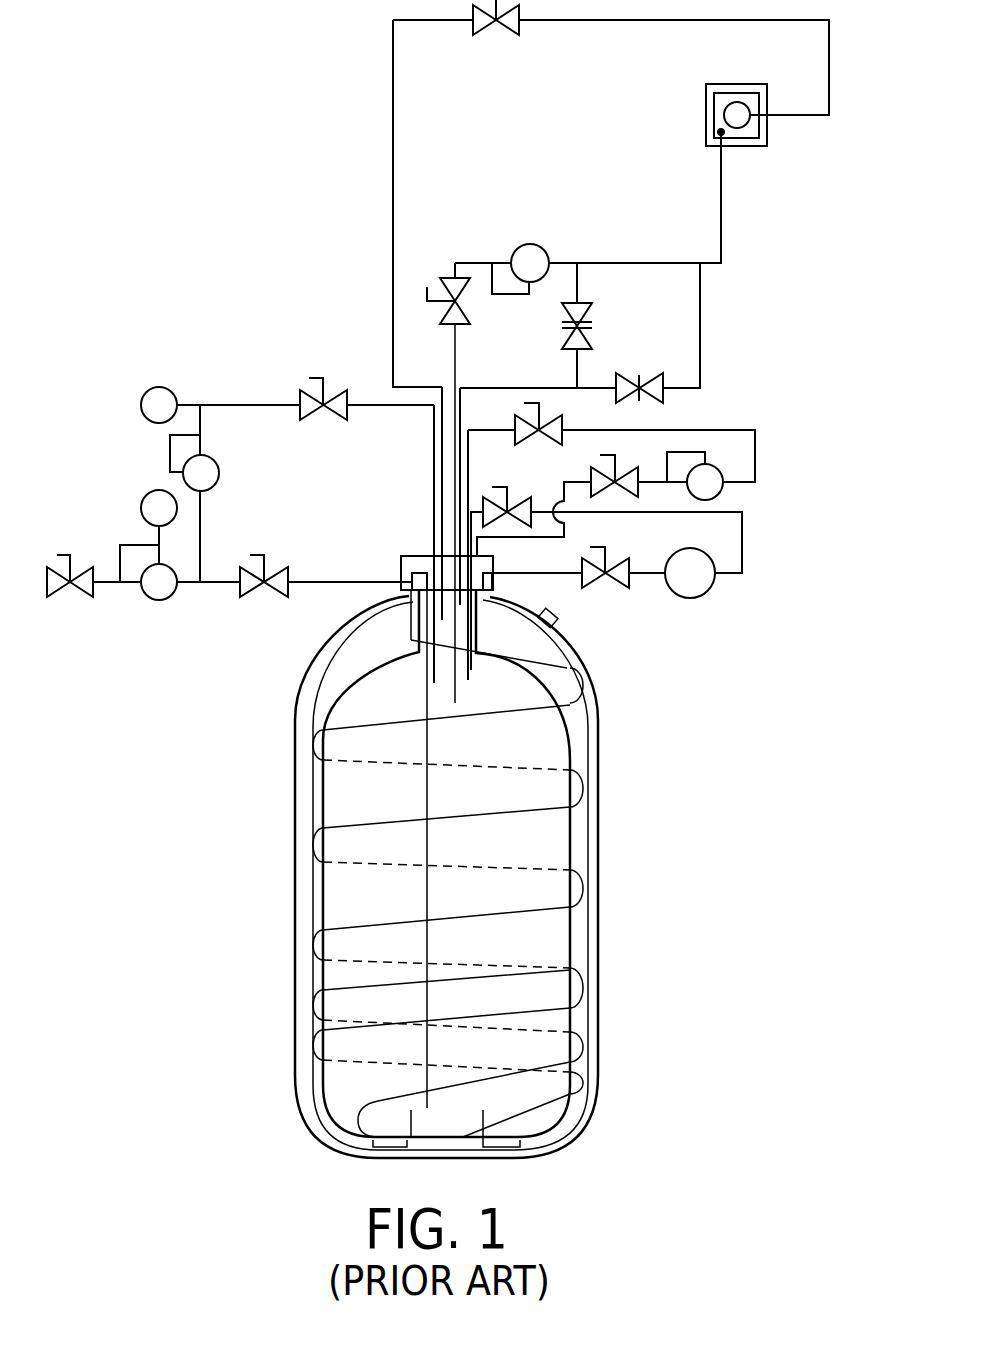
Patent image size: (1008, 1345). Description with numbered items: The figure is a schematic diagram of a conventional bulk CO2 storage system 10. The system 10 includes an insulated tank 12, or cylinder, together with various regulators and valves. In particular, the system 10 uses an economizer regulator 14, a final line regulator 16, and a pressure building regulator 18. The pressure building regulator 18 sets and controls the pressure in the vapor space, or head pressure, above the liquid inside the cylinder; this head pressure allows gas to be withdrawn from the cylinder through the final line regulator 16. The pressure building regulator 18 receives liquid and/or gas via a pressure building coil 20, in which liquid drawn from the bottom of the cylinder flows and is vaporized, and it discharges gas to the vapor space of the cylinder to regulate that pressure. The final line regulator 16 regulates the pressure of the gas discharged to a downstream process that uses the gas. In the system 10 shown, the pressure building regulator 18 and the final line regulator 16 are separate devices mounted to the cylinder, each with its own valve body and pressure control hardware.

The bulk CO2 storage system 10 is at (464, 579).
The insulated tank 12 is at (597, 1035).
The economizer regulator 14 is at (219, 473).
The final line regulator 16 is at (159, 600).
The pressure building regulator 18 is at (723, 486).
The pressure building coil 20 is at (333, 990).